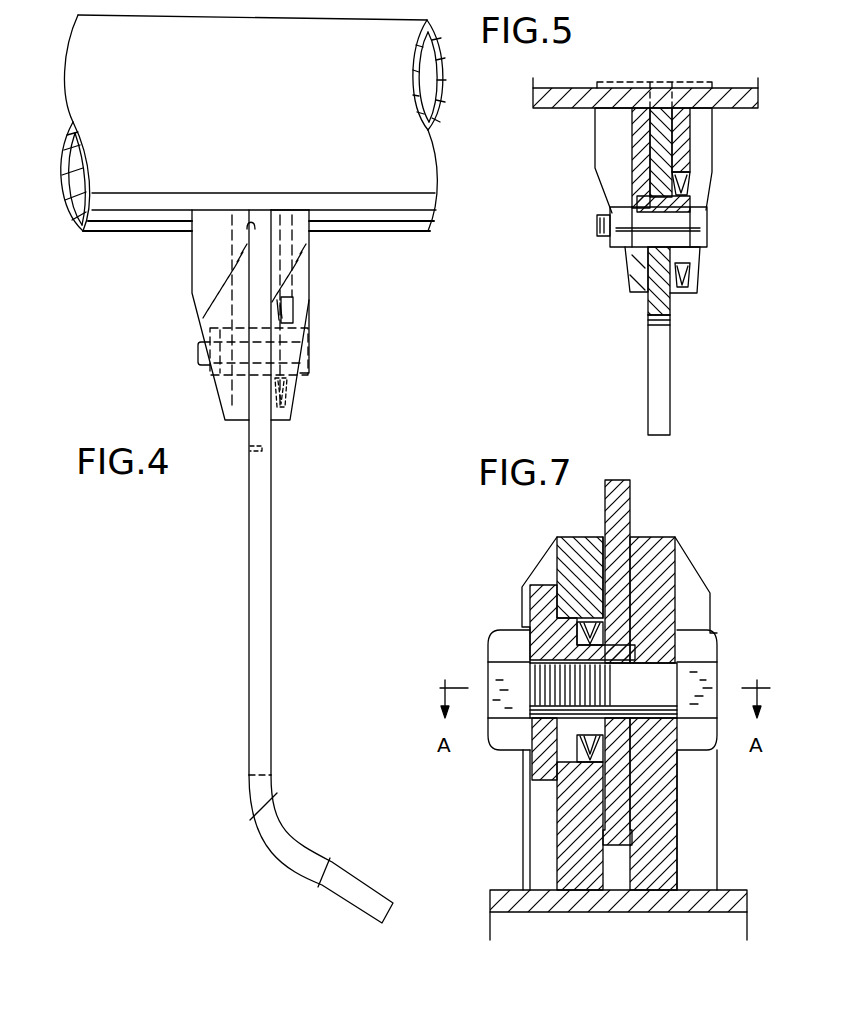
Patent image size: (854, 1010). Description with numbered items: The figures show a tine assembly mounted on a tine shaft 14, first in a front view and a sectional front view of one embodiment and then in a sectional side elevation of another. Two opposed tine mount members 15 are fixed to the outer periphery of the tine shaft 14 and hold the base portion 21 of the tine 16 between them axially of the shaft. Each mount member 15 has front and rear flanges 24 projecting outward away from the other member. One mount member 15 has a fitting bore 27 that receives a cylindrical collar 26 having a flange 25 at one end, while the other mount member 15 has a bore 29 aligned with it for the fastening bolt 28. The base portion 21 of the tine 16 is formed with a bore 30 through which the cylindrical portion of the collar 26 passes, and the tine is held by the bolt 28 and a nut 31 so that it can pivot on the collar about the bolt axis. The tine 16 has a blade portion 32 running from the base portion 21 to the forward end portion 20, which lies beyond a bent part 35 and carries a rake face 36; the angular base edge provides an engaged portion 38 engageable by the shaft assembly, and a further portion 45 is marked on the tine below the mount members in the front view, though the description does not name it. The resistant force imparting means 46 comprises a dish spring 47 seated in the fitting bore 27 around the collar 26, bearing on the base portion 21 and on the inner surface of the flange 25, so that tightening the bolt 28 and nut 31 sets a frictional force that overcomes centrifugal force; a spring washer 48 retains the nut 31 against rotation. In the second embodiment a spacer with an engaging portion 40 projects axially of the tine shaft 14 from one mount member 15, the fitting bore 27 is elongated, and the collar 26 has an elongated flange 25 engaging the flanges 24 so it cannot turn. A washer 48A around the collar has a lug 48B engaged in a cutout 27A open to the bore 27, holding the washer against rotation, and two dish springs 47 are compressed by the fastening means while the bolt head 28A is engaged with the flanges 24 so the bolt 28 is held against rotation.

In FIG. 4, the tine shaft 14 is at (426, 173).
In FIG. 5, the tine shaft 14 is at (547, 109).
In FIG. 7, the tine shaft 14 is at (522, 906).
In FIG. 4, the tine mount members 15 is at (190, 287).
In FIG. 5, the tine mount members 15 is at (630, 120).
In FIG. 7, the tine mount members 15 is at (581, 546).
In FIG. 4, the tine 16 is at (247, 685).
In FIG. 5, the tine 16 is at (671, 412).
In FIG. 7, the tine 16 is at (634, 506).
In FIG. 4, the forward end portion 20 is at (392, 924).
In FIG. 4, the base portion 21 is at (271, 242).
In FIG. 5, the base portion 21 is at (663, 150).
In FIG. 4, the flanges 24 is at (300, 263).
In FIG. 5, the flanges 24 is at (595, 168).
In FIG. 7, the flanges 24 is at (700, 576).
In FIG. 4, the flange 25 is at (295, 311).
In FIG. 5, the flange 25 is at (696, 277).
In FIG. 7, the flange 25 is at (530, 796).
In FIG. 4, the cylindrical collar 26 is at (228, 401).
In FIG. 5, the cylindrical collar 26 is at (634, 270).
In FIG. 7, the cylindrical collar 26 is at (606, 718).
In FIG. 5, the fitting bore 27 is at (688, 176).
In FIG. 7, the fitting bore 27 is at (541, 597).
In FIG. 7, the cutout 27A is at (545, 780).
In FIG. 4, the fastening bolt 28 is at (310, 358).
In FIG. 5, the fastening bolt 28 is at (692, 231).
In FIG. 7, the fastening bolt 28 is at (690, 755).
In FIG. 5, the bolt head 28A is at (708, 248).
In FIG. 7, the bolt head 28A is at (707, 676).
In FIG. 5, the bore 29 is at (636, 250).
In FIG. 7, the bore 29 is at (682, 661).
In FIG. 5, the bore 30 is at (639, 283).
In FIG. 7, the bore 30 is at (641, 771).
In FIG. 4, the nut 31 is at (210, 379).
In FIG. 5, the nut 31 is at (620, 211).
In FIG. 7, the nut 31 is at (496, 643).
In FIG. 4, the blade portion 32 is at (274, 720).
In FIG. 4, the bent part 35 is at (234, 836).
In FIG. 4, the rake face 36 is at (315, 904).
In FIG. 4, the engaged portion 38 is at (247, 228).
In FIG. 4, the engaging portion 40 is at (260, 212).
In FIG. 5, the engaging portion 40 is at (660, 106).
In FIG. 7, the engaging portion 40 is at (619, 846).
In FIG. 4, the rod section 45 is at (251, 450).
In FIG. 4, the resistant force imparting means 46 is at (289, 394).
In FIG. 5, the resistant force imparting means 46 is at (680, 297).
In FIG. 7, the resistant force imparting means 46 is at (568, 633).
In FIG. 5, the dish spring 47 is at (692, 291).
In FIG. 7, the dish spring 47 is at (601, 630).
In FIG. 5, the spring washer 48 is at (612, 228).
In FIG. 7, the spring washer 48 is at (522, 756).
In FIG. 7, the washer 48A is at (678, 801).
In FIG. 7, the lug 48B is at (582, 870).